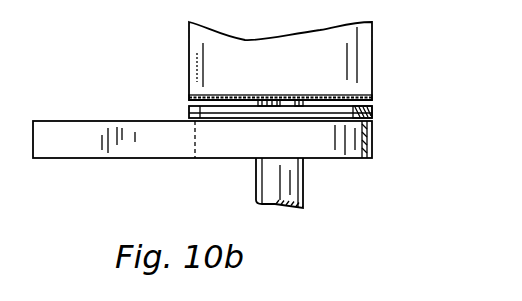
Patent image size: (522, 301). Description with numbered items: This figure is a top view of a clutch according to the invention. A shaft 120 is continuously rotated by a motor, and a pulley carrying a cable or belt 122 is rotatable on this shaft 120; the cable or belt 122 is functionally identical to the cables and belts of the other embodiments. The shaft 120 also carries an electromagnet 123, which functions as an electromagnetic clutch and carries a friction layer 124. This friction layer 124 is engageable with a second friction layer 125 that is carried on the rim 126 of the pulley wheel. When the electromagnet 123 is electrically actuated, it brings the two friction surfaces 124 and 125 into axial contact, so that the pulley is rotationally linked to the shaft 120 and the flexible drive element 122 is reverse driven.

The shaft 120 is at (290, 182).
The cable or belt 122 is at (110, 152).
The electromagnet 123 is at (353, 44).
The friction layer 124 is at (355, 95).
The friction layer 125 is at (373, 107).
The rim 126 is at (373, 118).